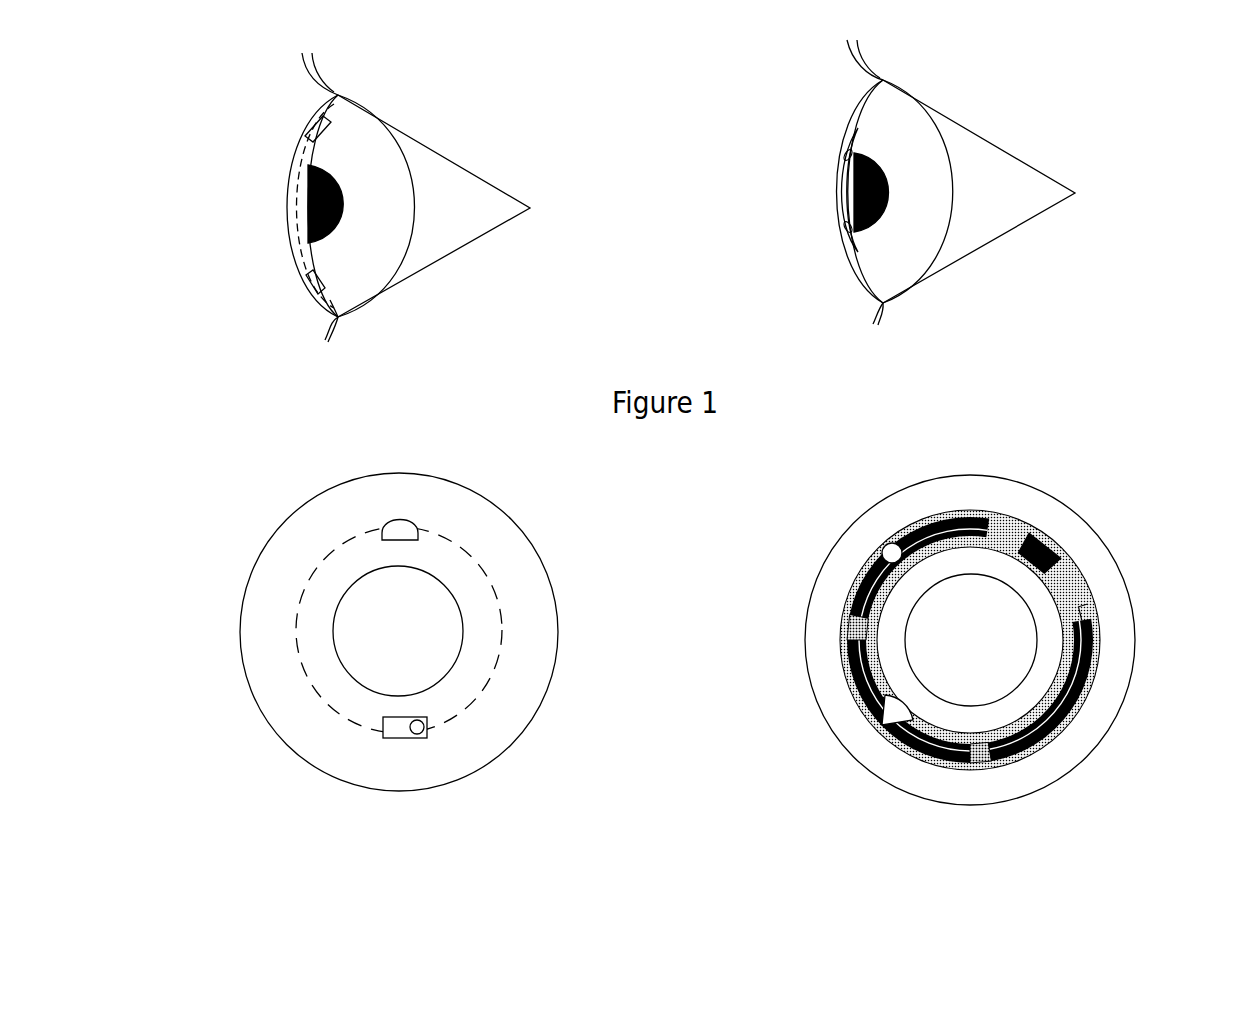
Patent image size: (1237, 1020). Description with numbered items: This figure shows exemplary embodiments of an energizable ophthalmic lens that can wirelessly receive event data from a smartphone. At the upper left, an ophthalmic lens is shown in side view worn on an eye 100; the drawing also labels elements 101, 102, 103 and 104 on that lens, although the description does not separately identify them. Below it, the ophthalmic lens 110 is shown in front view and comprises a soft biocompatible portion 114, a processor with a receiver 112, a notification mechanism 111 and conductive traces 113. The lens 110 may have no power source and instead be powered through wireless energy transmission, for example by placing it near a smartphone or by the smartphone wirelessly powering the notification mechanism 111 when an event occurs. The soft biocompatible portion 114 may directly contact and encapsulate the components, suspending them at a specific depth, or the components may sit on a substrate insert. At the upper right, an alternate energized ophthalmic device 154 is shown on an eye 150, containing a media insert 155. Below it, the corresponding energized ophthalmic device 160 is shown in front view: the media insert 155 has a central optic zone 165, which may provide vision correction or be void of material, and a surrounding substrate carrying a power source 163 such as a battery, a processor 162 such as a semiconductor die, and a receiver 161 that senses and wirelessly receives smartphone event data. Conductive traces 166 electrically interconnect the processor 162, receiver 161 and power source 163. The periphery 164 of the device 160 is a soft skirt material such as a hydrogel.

The eye 100 is at (362, 220).
The contact lens 101 is at (312, 131).
The electronic component 102 is at (310, 278).
The electronic component 103 is at (296, 202).
The lens posterior surface 104 is at (330, 307).
The ophthalmic lens 110 is at (392, 635).
The notification mechanism 111 is at (383, 529).
The processor with a receiver 112 is at (433, 727).
The conductive traces 113 is at (295, 637).
The soft biocompatible portion 114 is at (288, 722).
The eye 150 is at (898, 222).
The energized ophthalmic device 154 is at (870, 280).
The media insert 155 is at (838, 195).
The energized ophthalmic device 160 is at (982, 639).
The receiver 161 is at (882, 719).
The processor 162 is at (1037, 542).
The power source 163 is at (1080, 717).
The periphery 164 is at (937, 492).
The optic zone 165 is at (1017, 635).
The conductive traces 166 is at (892, 553).